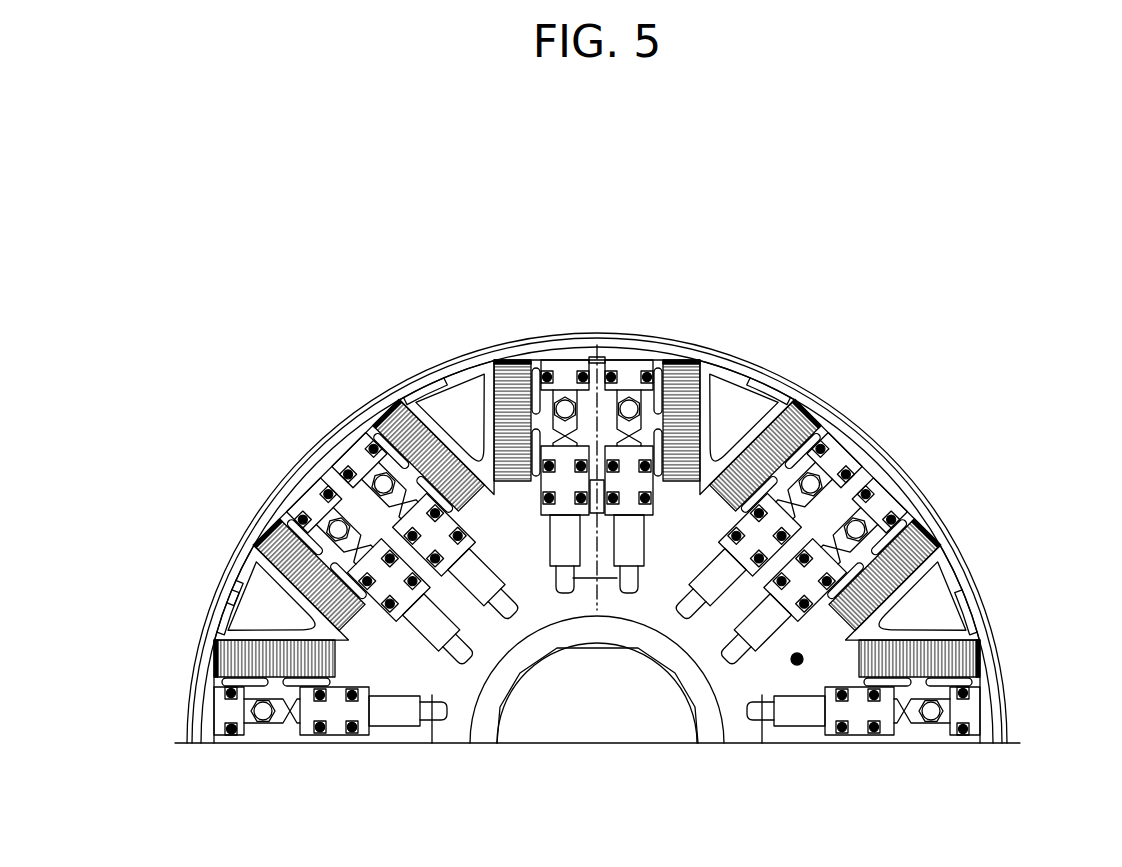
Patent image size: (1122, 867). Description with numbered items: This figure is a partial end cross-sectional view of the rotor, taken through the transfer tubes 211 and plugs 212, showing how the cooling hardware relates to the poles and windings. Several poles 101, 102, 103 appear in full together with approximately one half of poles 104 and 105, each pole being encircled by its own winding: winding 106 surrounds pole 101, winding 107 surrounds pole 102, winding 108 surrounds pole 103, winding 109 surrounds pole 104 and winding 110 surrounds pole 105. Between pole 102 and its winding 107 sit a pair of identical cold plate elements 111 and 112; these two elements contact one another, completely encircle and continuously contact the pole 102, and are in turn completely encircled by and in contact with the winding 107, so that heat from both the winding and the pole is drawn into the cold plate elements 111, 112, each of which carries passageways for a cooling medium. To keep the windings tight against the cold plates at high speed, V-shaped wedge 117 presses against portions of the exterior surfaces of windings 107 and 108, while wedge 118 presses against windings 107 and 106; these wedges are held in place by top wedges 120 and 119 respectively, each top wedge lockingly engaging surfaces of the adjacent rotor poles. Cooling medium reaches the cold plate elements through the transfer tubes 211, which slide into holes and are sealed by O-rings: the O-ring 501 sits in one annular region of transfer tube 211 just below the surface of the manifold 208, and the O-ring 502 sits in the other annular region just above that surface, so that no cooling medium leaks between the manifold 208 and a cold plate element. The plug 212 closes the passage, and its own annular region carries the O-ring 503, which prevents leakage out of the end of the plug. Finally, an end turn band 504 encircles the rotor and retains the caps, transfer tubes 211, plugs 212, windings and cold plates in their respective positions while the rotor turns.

The pole 101 is at (300, 447).
The pole 102 is at (590, 330).
The pole 103 is at (888, 451).
The pole 104 is at (1005, 720).
The pole 105 is at (188, 713).
The winding 106 is at (375, 428).
The winding 107 is at (505, 400).
The winding 108 is at (797, 443).
The winding 109 is at (925, 658).
The winding 110 is at (260, 658).
The cold plate element 111 is at (531, 362).
The cold plate element 112 is at (663, 362).
The wedge 117 is at (710, 407).
The wedge 118 is at (478, 405).
The top wedge 119 is at (450, 367).
The top wedge 120 is at (740, 370).
The manifold 208 is at (797, 665).
The transfer tube 211 is at (585, 493).
The plug 212 is at (560, 355).
The O-ring seal 501 is at (353, 735).
The O-ring seal 502 is at (321, 735).
The O-ring seal 503 is at (234, 735).
The end turn band 504 is at (223, 575).